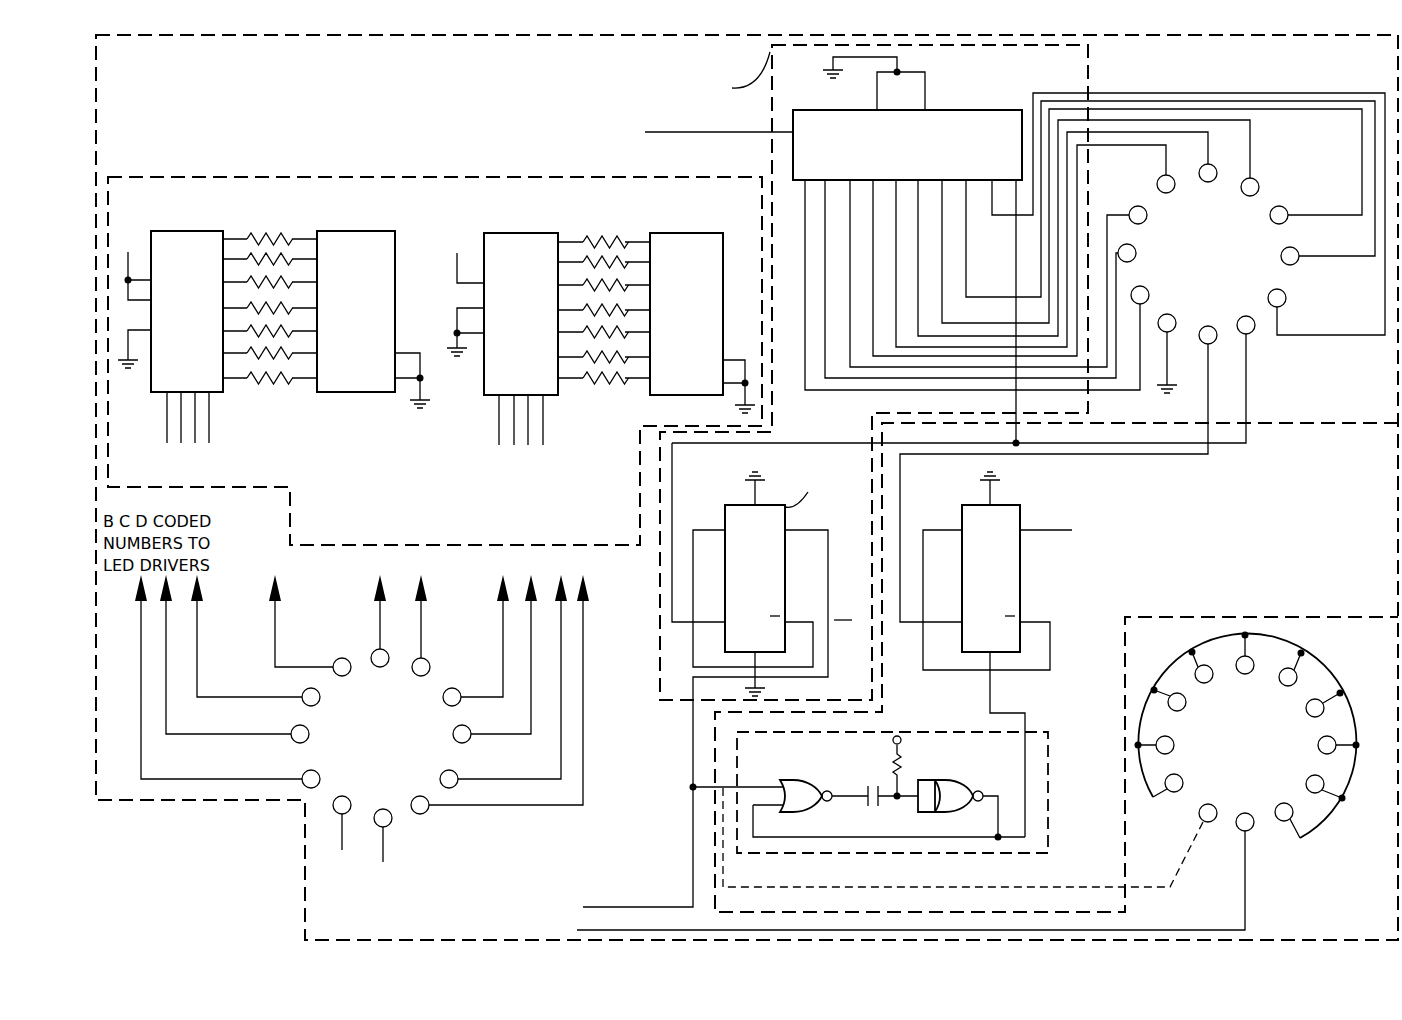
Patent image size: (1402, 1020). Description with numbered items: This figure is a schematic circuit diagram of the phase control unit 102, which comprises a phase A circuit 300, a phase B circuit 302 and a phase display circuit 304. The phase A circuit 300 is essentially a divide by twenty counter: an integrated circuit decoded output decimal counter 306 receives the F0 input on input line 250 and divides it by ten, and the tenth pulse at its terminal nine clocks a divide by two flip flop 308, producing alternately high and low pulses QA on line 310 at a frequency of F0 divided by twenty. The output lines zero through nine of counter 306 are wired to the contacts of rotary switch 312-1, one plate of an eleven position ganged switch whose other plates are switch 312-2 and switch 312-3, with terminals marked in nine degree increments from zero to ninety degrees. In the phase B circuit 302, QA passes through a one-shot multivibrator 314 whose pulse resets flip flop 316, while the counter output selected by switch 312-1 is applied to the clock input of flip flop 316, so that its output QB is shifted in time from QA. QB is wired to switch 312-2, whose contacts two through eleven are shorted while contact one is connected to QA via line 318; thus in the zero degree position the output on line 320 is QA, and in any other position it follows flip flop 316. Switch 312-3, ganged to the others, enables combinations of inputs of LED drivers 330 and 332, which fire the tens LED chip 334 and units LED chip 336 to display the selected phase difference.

The phase control unit 102 is at (190, 933).
The Fo clock signal line from FIG. 6 250 is at (743, 130).
The phase A circuit 300 is at (826, 75).
The phase B circuit 302 is at (1288, 509).
The phase display circuit 304 is at (398, 538).
The decoded output decimal counter 306 is at (960, 160).
The divide by 2 flip flop 308 is at (774, 584).
The line 310 is at (622, 906).
The rotary switch 312-1 is at (1208, 254).
The switch 312-2 is at (1247, 760).
The switch 312-3 is at (362, 735).
The one-shot multivibrator 314 is at (903, 839).
The flip flop 316 is at (1012, 588).
The line 318 is at (1116, 890).
The line 320 is at (616, 930).
The LED driver 330 is at (208, 372).
The LED driver 332 is at (540, 320).
The LED chip 334 is at (380, 320).
The LED chip 336 is at (706, 320).